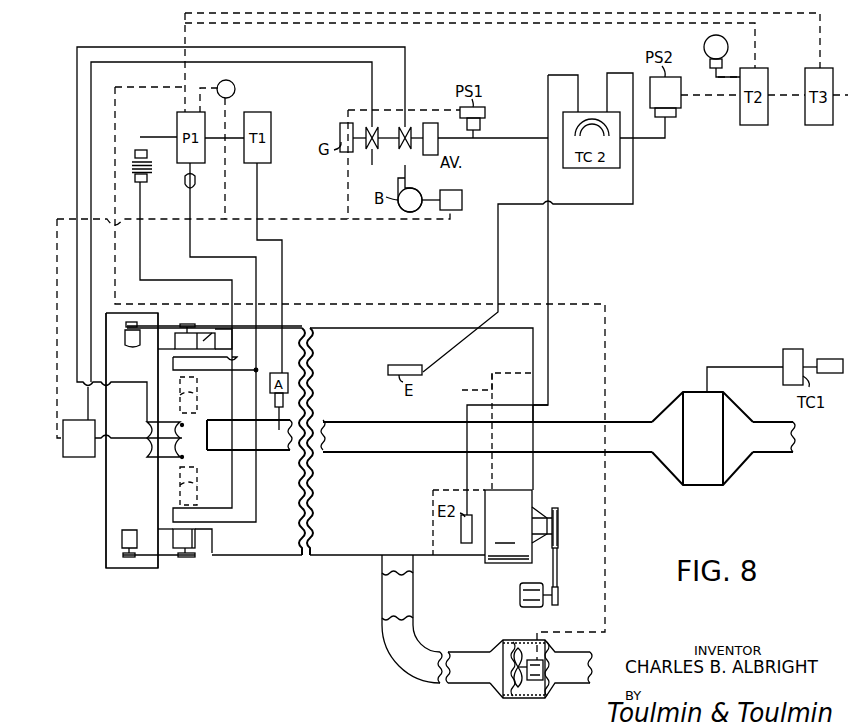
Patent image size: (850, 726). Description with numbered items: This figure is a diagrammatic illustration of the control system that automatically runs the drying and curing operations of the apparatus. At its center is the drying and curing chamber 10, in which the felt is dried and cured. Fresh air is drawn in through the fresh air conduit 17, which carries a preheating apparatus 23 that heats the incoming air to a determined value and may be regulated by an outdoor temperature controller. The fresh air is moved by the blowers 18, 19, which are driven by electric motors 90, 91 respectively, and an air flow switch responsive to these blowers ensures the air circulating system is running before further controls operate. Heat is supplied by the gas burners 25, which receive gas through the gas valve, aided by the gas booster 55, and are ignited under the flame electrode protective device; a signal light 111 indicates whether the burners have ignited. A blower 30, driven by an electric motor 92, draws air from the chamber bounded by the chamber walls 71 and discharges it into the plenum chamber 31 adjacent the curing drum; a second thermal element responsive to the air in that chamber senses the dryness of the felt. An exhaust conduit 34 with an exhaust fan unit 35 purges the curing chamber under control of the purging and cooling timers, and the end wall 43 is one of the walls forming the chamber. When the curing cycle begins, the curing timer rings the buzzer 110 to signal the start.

The drying and curing chamber 10 is at (352, 538).
The fresh air conduit 17 is at (373, 443).
The blower 18 is at (202, 333).
The blower 19 is at (202, 540).
The preheating apparatus 23 is at (695, 392).
The gas burners 25 is at (197, 395).
The blower 30 is at (520, 502).
The plenum chamber 31 is at (486, 431).
The exhaust conduit 34 is at (402, 660).
The exhaust fan unit 35 is at (543, 687).
The end wall 43 is at (534, 417).
The gas booster 55 is at (80, 452).
The chamber walls 71 is at (433, 540).
The electric motor 90 is at (127, 342).
The electric motor 91 is at (137, 528).
The electric motor 92 is at (524, 593).
The buzzer 110 is at (706, 52).
The signal light 111 is at (235, 88).